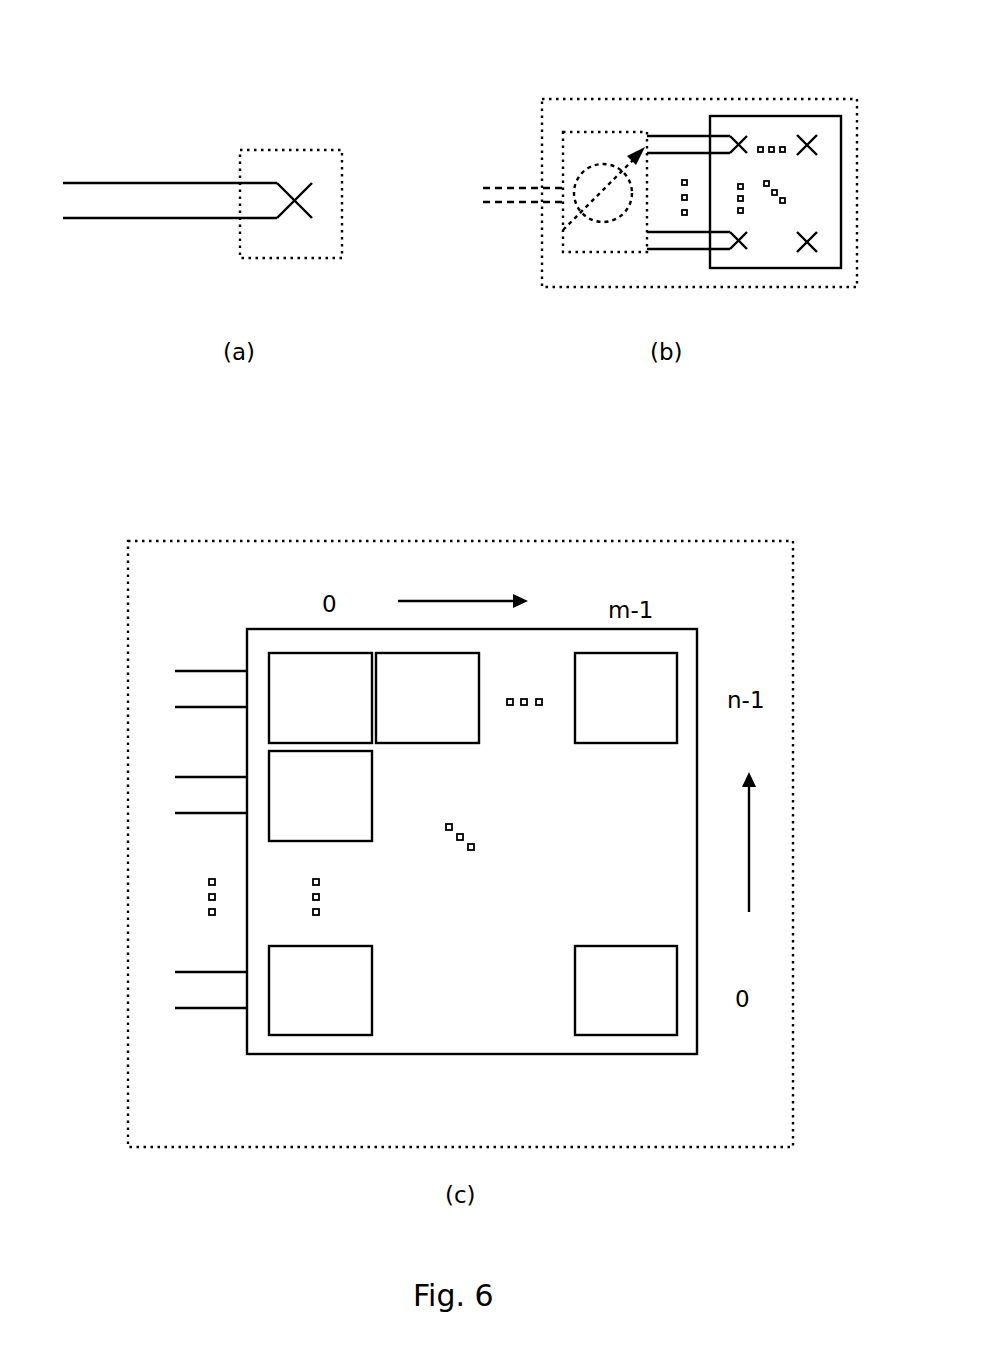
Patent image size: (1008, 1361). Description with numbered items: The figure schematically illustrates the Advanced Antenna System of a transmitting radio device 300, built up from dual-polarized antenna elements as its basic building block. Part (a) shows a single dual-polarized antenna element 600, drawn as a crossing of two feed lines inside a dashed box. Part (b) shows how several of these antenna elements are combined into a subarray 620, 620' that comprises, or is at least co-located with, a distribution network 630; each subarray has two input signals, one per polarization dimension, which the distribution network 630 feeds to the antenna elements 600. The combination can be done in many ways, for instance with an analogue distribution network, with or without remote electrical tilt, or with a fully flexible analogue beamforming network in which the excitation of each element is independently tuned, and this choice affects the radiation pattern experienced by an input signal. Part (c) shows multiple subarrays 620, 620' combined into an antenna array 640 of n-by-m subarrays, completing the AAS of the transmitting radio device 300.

The dual-polarized antenna element 600 is at (290, 150).
The subarray 620 is at (555, 564).
The subarray 620' is at (699, 144).
The distribution network 630 is at (602, 147).
The transmitting radio device 300 is at (193, 548).
The antenna array 640 is at (547, 629).